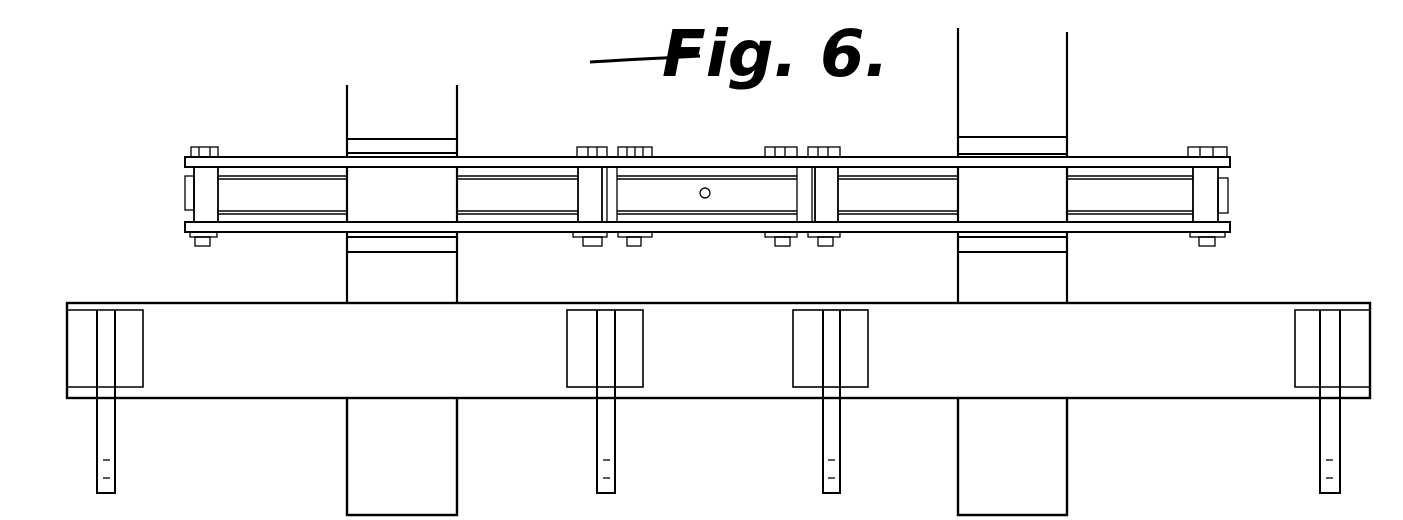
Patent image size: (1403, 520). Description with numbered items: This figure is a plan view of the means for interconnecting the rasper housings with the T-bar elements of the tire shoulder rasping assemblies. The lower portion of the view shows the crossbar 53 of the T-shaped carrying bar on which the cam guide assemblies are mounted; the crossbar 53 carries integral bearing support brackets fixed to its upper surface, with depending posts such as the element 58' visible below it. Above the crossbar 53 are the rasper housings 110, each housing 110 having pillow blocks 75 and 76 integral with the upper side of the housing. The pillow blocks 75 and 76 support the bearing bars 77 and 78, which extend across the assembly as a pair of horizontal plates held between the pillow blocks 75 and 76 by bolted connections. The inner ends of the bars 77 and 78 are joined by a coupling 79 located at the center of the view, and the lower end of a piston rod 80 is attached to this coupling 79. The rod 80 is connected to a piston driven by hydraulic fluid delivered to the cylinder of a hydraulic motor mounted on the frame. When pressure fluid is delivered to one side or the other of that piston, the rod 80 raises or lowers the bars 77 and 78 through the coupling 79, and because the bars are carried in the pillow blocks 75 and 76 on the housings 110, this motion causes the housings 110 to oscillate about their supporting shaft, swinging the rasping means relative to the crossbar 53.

The crossbar 53 is at (242, 382).
The mounting post 58' is at (1326, 415).
The pillow block 75 is at (428, 204).
The pillow block 76 is at (1052, 207).
The bearing bar 77 is at (507, 188).
The bearing bar 78 is at (900, 192).
The coupling 79 is at (725, 175).
The piston rod 80 is at (707, 198).
The housing 110 is at (437, 432).